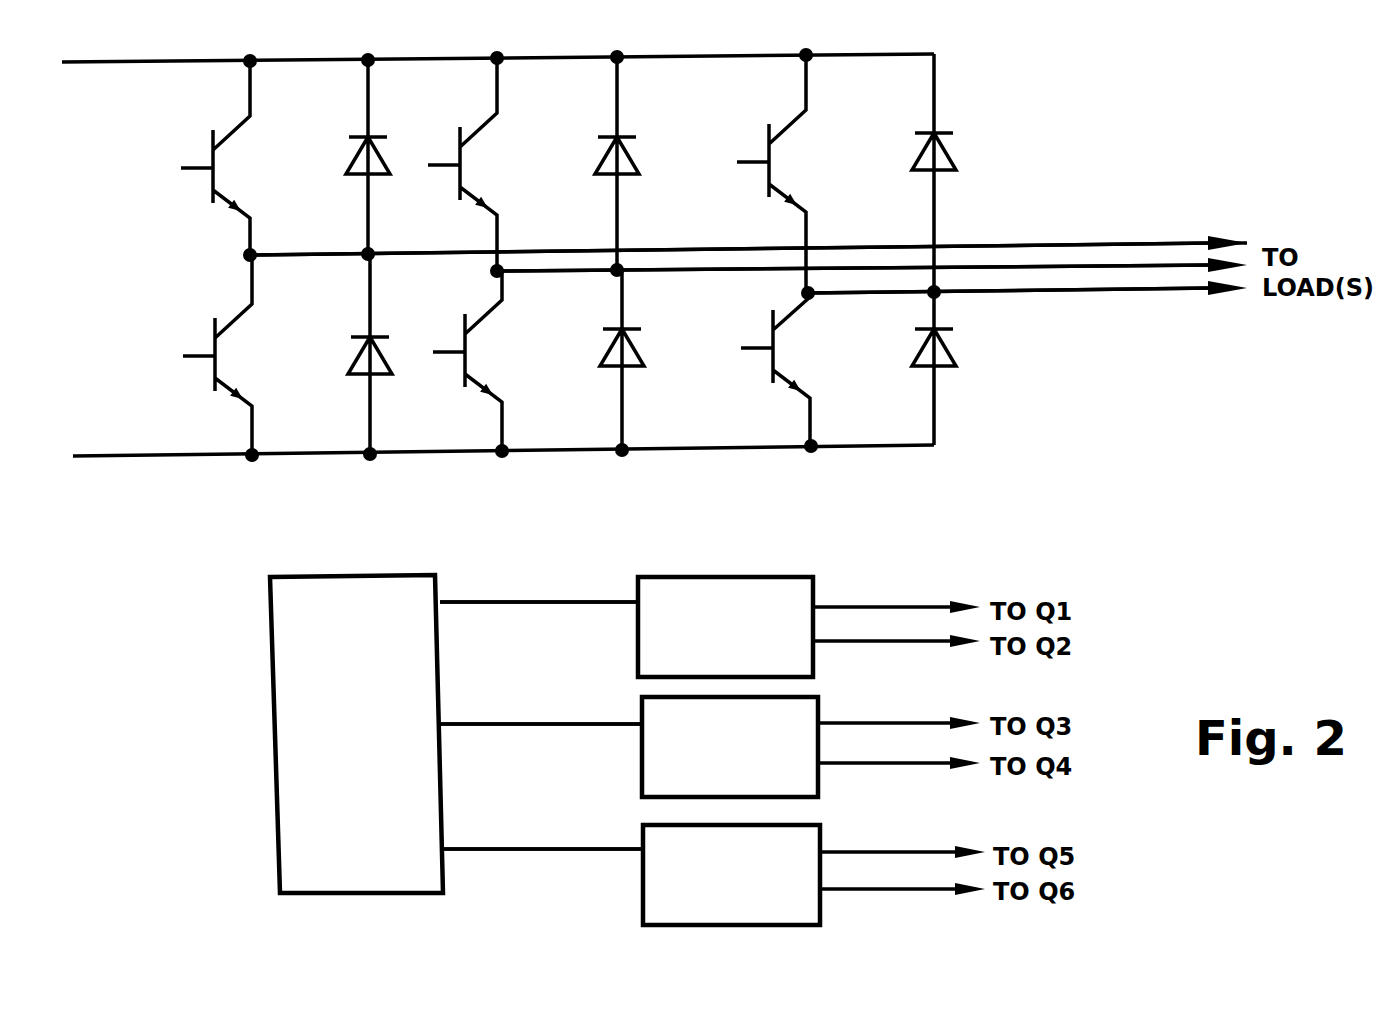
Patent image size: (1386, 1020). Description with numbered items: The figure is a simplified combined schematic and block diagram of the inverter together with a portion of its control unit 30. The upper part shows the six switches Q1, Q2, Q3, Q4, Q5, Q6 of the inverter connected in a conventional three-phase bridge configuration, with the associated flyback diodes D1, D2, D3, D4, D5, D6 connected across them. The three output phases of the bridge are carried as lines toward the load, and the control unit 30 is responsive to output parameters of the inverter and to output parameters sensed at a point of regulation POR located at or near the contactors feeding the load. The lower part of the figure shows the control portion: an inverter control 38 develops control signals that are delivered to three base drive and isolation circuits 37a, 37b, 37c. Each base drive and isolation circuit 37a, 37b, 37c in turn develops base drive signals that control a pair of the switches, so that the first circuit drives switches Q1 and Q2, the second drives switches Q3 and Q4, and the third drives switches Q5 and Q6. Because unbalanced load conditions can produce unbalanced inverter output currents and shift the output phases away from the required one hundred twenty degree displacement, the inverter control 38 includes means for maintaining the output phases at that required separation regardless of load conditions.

The switch Q1 is at (234, 125).
The switch Q2 is at (236, 320).
The switch Q3 is at (483, 126).
The switch Q4 is at (483, 322).
The switch Q5 is at (792, 128).
The switch Q6 is at (790, 320).
The flyback diode D1 is at (372, 140).
The flyback diode D2 is at (373, 337).
The flyback diode D3 is at (641, 155).
The flyback diode D4 is at (632, 348).
The flyback diode D5 is at (945, 150).
The flyback diode D6 is at (948, 348).
The point of regulation POR is at (1162, 318).
The inverter control 38 is at (282, 638).
The base drive and isolation circuit 37a is at (713, 577).
The base drive and isolation circuit 37b is at (640, 705).
The base drive and isolation circuit 37c is at (643, 893).
The control unit 30 is at (478, 880).